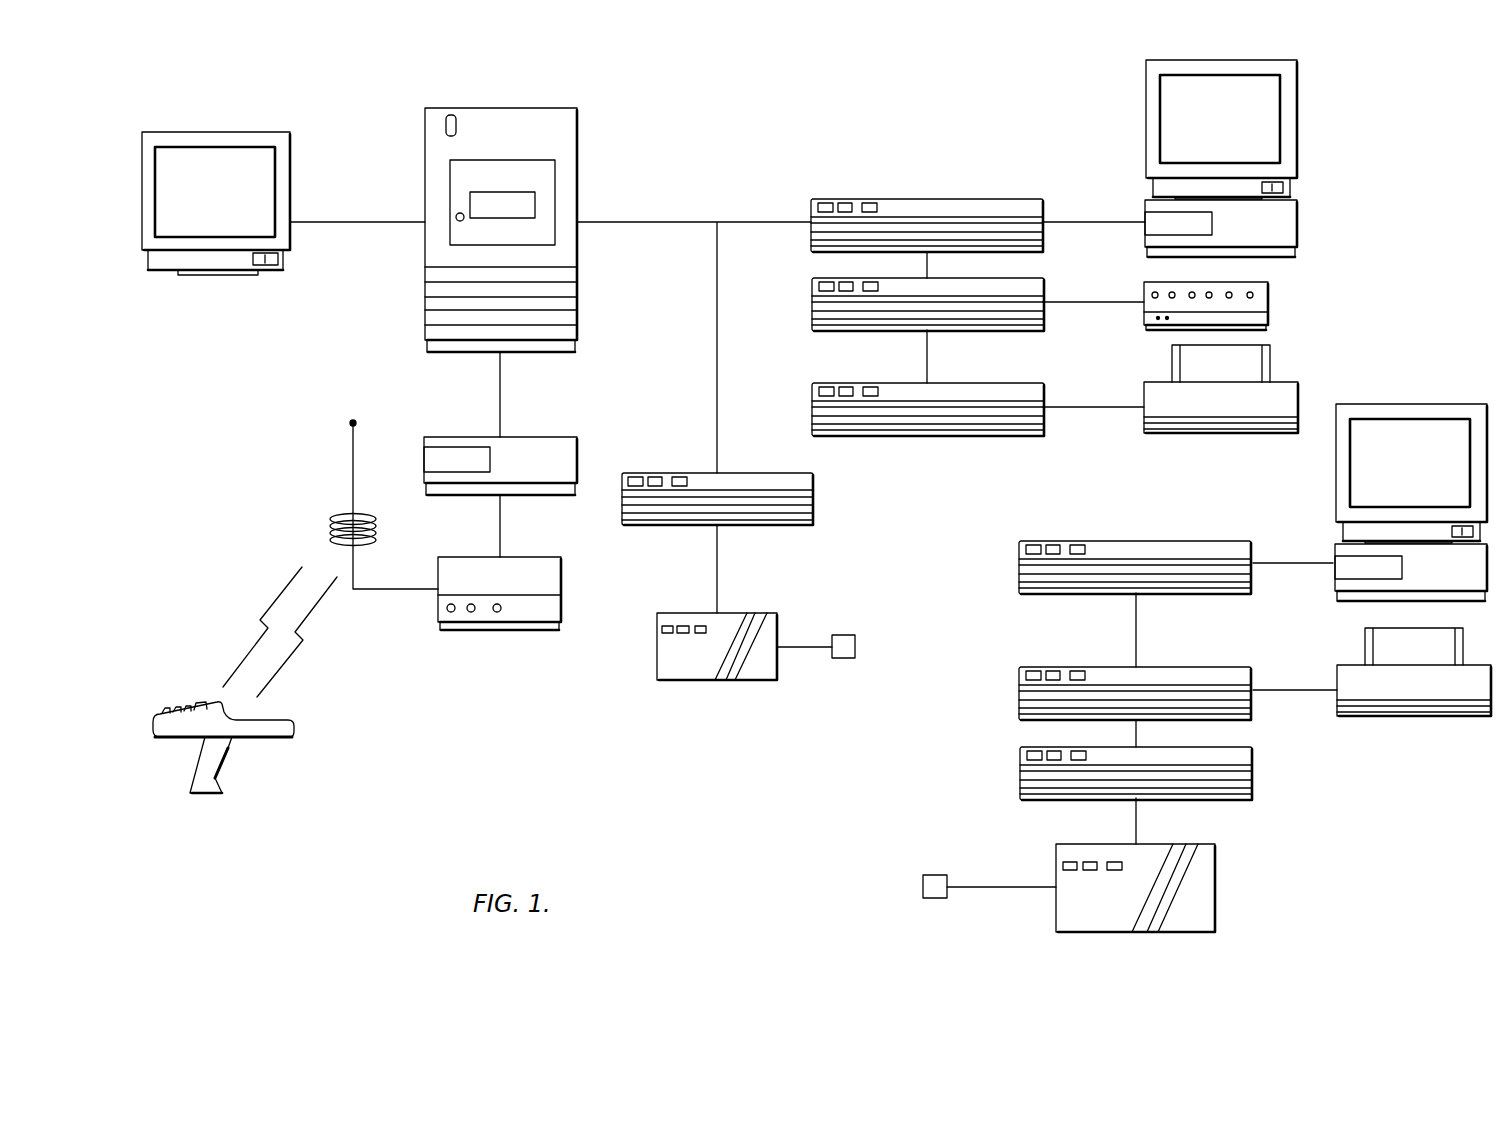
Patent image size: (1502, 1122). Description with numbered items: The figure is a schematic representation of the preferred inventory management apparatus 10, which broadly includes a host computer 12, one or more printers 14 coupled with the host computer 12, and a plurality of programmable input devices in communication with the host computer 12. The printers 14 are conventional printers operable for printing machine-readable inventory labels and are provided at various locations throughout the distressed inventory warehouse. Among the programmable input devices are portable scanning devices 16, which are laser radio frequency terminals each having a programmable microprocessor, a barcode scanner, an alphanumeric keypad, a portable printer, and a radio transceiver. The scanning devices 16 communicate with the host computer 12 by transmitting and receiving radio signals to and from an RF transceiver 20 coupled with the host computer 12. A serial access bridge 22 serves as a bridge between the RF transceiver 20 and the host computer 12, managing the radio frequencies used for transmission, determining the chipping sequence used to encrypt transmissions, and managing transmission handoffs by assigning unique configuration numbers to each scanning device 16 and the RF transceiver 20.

The inventory management apparatus 10 is at (750, 158).
The host computer 12 is at (567, 167).
The printer 14 is at (1250, 428).
The portable scanning device 16 is at (243, 756).
The RF transceiver 20 is at (555, 583).
The serial access bridge 22 is at (552, 442).